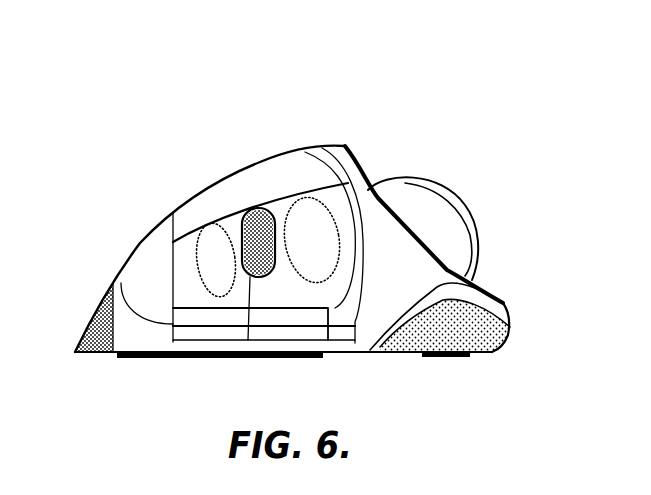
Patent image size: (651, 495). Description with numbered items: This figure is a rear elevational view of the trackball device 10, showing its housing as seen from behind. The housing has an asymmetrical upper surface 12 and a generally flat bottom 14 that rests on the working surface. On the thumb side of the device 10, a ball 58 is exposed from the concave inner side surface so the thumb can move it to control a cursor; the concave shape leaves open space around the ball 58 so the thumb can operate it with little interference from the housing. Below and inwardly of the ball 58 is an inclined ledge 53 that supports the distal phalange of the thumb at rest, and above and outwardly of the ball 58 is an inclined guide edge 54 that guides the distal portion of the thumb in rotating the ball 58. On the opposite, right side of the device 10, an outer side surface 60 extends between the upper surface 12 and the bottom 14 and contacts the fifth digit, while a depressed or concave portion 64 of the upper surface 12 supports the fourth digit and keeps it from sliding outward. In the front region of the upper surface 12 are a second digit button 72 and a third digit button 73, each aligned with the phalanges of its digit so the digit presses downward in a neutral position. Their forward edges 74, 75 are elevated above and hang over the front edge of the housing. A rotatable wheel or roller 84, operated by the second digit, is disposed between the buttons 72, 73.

The trackball device 10 is at (446, 60).
The upper surface 12 is at (300, 142).
The bottom 14 is at (110, 354).
The ledge 53 is at (493, 288).
The guide edge 54 is at (360, 167).
The ball 58 is at (436, 228).
The outer side surface 60 is at (98, 315).
The depressed portion 64 is at (142, 258).
The second digit button 72 is at (280, 297).
The third digit button 73 is at (193, 293).
The forward edge 74 is at (303, 318).
The forward edge 75 is at (220, 320).
The roller 84 is at (253, 230).